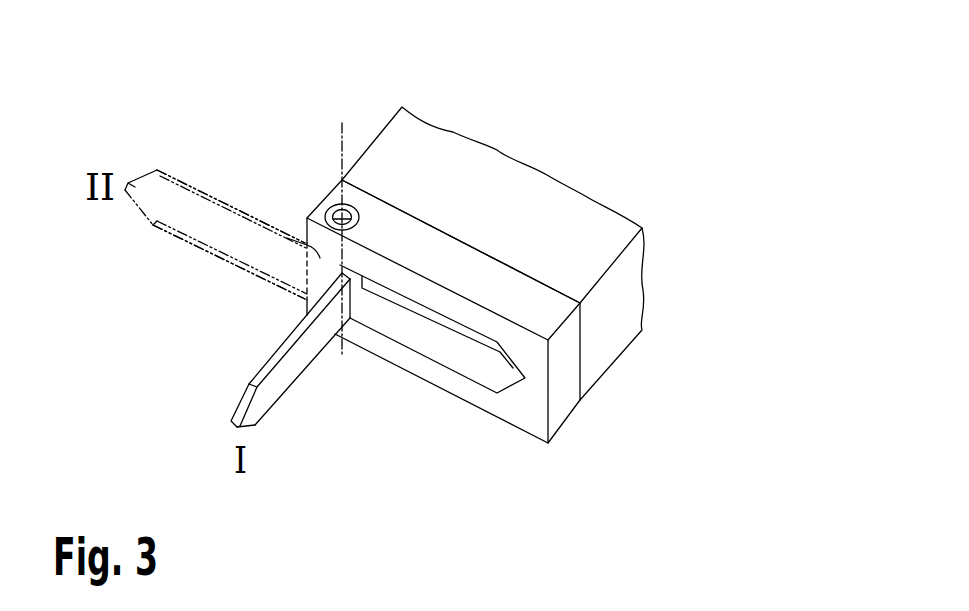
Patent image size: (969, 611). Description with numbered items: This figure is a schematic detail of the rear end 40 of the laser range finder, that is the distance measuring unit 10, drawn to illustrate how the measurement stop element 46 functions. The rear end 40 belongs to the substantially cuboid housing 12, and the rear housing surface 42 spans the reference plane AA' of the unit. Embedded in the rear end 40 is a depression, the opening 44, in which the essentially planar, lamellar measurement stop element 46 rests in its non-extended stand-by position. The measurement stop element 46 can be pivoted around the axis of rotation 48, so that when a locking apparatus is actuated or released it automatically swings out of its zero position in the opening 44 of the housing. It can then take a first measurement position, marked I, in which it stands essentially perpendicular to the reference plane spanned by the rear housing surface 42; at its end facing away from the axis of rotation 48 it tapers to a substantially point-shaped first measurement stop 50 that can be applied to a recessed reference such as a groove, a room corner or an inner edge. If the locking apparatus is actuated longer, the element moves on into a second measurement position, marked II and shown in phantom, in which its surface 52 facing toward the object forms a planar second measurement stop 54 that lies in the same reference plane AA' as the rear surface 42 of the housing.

The distance measuring unit 10 is at (630, 102).
The housing 12 is at (673, 362).
The rear end 40 is at (562, 402).
The rear housing surface 42 is at (513, 403).
The opening 44 is at (445, 348).
The measurement stop element 46 is at (246, 375).
The axis of rotation 48 is at (337, 133).
The first measurement stop 50 is at (233, 425).
The surface facing toward the object 52 is at (222, 185).
The second measurement stop 54 is at (222, 185).